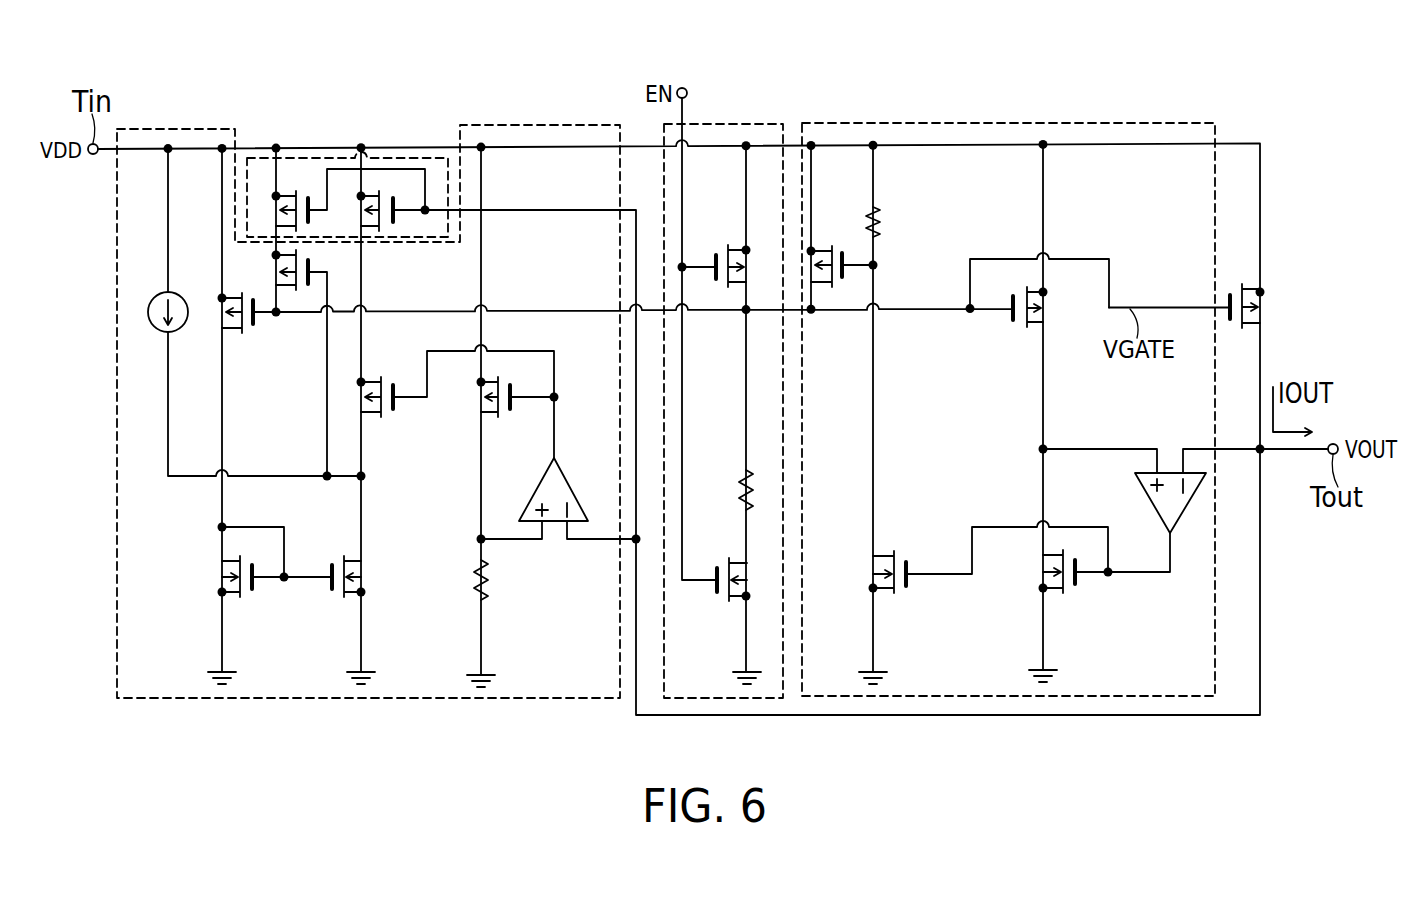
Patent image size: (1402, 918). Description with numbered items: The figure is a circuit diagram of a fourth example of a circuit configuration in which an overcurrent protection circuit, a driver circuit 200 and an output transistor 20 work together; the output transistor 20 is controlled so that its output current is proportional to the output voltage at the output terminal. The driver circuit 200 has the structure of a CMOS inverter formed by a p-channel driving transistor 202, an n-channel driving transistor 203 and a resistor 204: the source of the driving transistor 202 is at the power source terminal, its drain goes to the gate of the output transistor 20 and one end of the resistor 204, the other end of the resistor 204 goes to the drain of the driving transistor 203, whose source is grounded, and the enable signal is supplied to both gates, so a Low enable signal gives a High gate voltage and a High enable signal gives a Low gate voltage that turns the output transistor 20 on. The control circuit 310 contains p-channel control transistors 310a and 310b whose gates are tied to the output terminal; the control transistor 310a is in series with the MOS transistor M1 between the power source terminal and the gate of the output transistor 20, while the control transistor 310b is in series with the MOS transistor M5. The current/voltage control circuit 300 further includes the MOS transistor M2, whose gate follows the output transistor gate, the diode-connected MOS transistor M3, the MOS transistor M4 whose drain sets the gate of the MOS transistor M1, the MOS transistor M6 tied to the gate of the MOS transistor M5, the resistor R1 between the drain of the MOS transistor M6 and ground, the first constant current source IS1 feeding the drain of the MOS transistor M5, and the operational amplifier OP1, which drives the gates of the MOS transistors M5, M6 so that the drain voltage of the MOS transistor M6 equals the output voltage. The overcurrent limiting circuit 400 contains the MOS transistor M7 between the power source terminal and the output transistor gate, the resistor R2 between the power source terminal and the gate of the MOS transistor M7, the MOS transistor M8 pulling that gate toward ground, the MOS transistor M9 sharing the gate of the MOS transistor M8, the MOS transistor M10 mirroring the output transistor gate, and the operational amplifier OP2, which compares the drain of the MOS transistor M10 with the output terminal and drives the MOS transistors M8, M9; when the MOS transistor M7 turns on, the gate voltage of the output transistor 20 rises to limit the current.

The output transistor 20 is at (1257, 322).
The driver circuit 200 is at (729, 124).
The driving transistor 202 is at (728, 250).
The driving transistor 203 is at (733, 598).
The resistor 204 is at (743, 482).
The current/voltage control circuit 300 is at (548, 125).
The control circuit 310 is at (406, 152).
The control transistor 310a is at (307, 218).
The control transistor 310b is at (393, 227).
The overcurrent limiting circuit 400 is at (1003, 123).
The first constant current source IS1 is at (156, 298).
The MOS transistor M1 is at (297, 289).
The MOS transistor M2 is at (245, 331).
The MOS transistor M3 is at (244, 599).
The MOS transistor M4 is at (340, 599).
The MOS transistor M5 is at (386, 416).
The MOS transistor M6 is at (503, 416).
The MOS transistor M7 is at (830, 251).
The MOS transistor M8 is at (890, 568).
The MOS transistor M9 is at (1060, 568).
The MOS transistor M10 is at (1030, 324).
The operational amplifier OP1 is at (560, 479).
The operational amplifier OP2 is at (1147, 498).
The resistor R1 is at (488, 578).
The resistor R2 is at (882, 226).